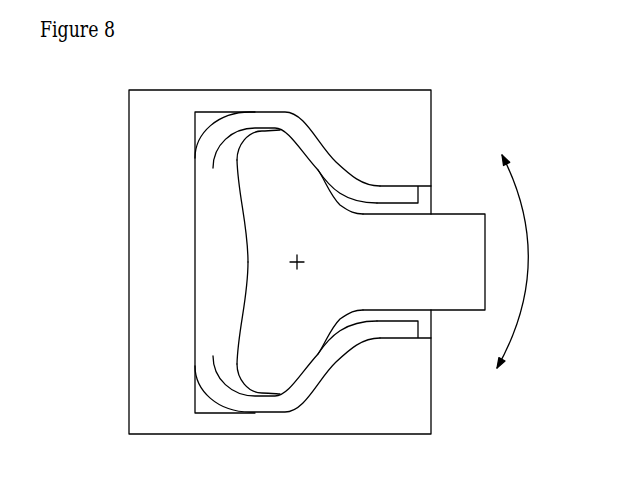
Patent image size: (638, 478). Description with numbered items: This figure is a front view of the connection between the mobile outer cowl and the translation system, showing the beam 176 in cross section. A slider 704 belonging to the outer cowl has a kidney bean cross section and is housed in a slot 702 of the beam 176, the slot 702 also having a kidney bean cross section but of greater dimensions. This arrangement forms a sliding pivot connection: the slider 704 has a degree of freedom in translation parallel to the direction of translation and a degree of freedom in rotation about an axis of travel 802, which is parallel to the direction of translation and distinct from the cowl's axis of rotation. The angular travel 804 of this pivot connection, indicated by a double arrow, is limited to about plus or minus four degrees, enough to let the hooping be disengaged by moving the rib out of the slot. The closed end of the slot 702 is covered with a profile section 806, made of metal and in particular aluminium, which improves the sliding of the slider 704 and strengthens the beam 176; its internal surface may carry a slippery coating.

The beam 176 is at (152, 398).
The slot 702 is at (223, 180).
The slider 704 is at (375, 264).
The axis of travel 802 is at (291, 262).
The angular travel 804 is at (532, 261).
The profile section 806 is at (378, 197).